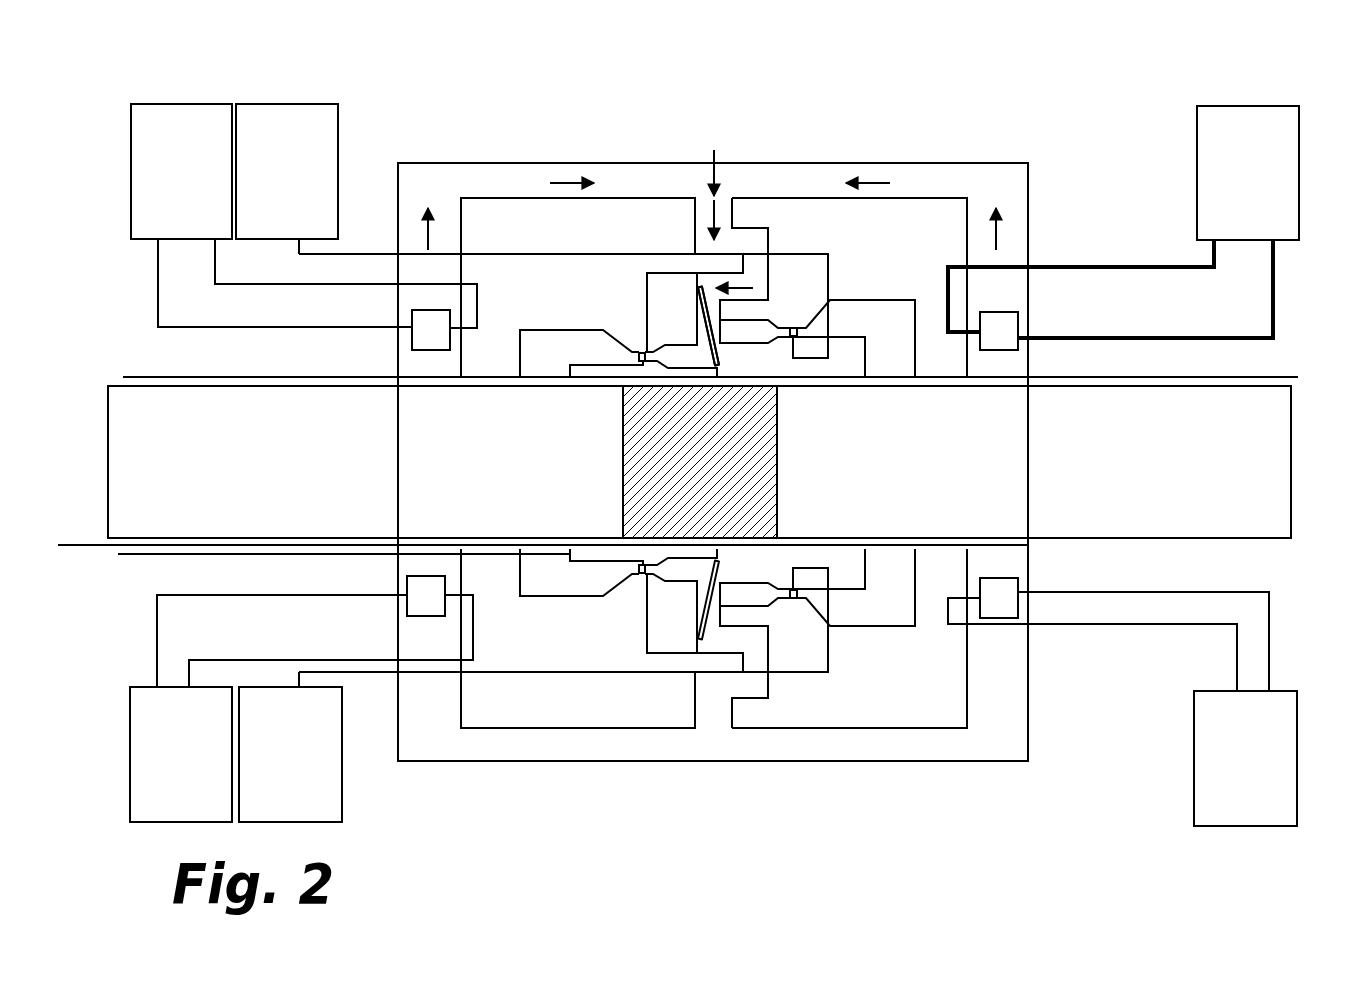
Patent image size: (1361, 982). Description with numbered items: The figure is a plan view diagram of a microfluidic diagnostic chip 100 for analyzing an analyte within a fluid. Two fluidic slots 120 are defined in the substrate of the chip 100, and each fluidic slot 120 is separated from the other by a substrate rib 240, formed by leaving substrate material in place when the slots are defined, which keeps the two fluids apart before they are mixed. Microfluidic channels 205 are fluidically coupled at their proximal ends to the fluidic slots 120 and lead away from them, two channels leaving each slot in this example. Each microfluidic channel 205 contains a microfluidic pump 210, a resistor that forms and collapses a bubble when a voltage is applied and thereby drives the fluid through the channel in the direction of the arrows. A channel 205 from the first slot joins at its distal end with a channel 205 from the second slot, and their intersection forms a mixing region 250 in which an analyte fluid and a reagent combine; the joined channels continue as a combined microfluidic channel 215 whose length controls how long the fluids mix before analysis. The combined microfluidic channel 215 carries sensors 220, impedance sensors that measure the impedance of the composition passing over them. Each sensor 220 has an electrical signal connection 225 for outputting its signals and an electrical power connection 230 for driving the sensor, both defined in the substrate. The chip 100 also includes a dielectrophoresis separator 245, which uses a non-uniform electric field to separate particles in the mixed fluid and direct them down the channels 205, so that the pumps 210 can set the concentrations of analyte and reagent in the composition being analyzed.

The microfluidic diagnostic chip 100 is at (222, 58).
The fluidic slot 120 is at (172, 512).
The microfluidic channel 205 is at (810, 192).
The microfluidic pump 210 is at (432, 335).
The combined microfluidic channel 215 is at (761, 252).
The sensor 220 is at (640, 343).
The electrical signal connection 225 is at (61, 552).
The electrical power connection 230 is at (369, 692).
The substrate rib 240 is at (712, 462).
The dielectrophoresis (DEP) separator 245 is at (721, 325).
The mixing region 250 is at (714, 150).